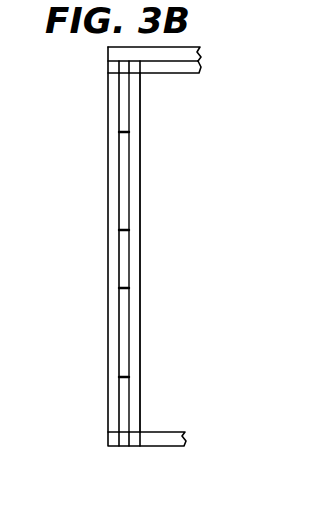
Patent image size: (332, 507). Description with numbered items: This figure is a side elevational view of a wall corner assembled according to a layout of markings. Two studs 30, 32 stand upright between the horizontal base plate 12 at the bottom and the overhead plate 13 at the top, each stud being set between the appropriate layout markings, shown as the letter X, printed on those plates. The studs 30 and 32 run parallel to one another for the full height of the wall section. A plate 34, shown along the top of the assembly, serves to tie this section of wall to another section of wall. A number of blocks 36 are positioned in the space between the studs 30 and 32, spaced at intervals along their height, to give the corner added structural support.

The plate 34 is at (199, 50).
The overhead plate 13 is at (193, 73).
The base plate 12 is at (176, 447).
The stud 30 is at (121, 252).
The stud 32 is at (141, 347).
The blocks 36 is at (123, 125).